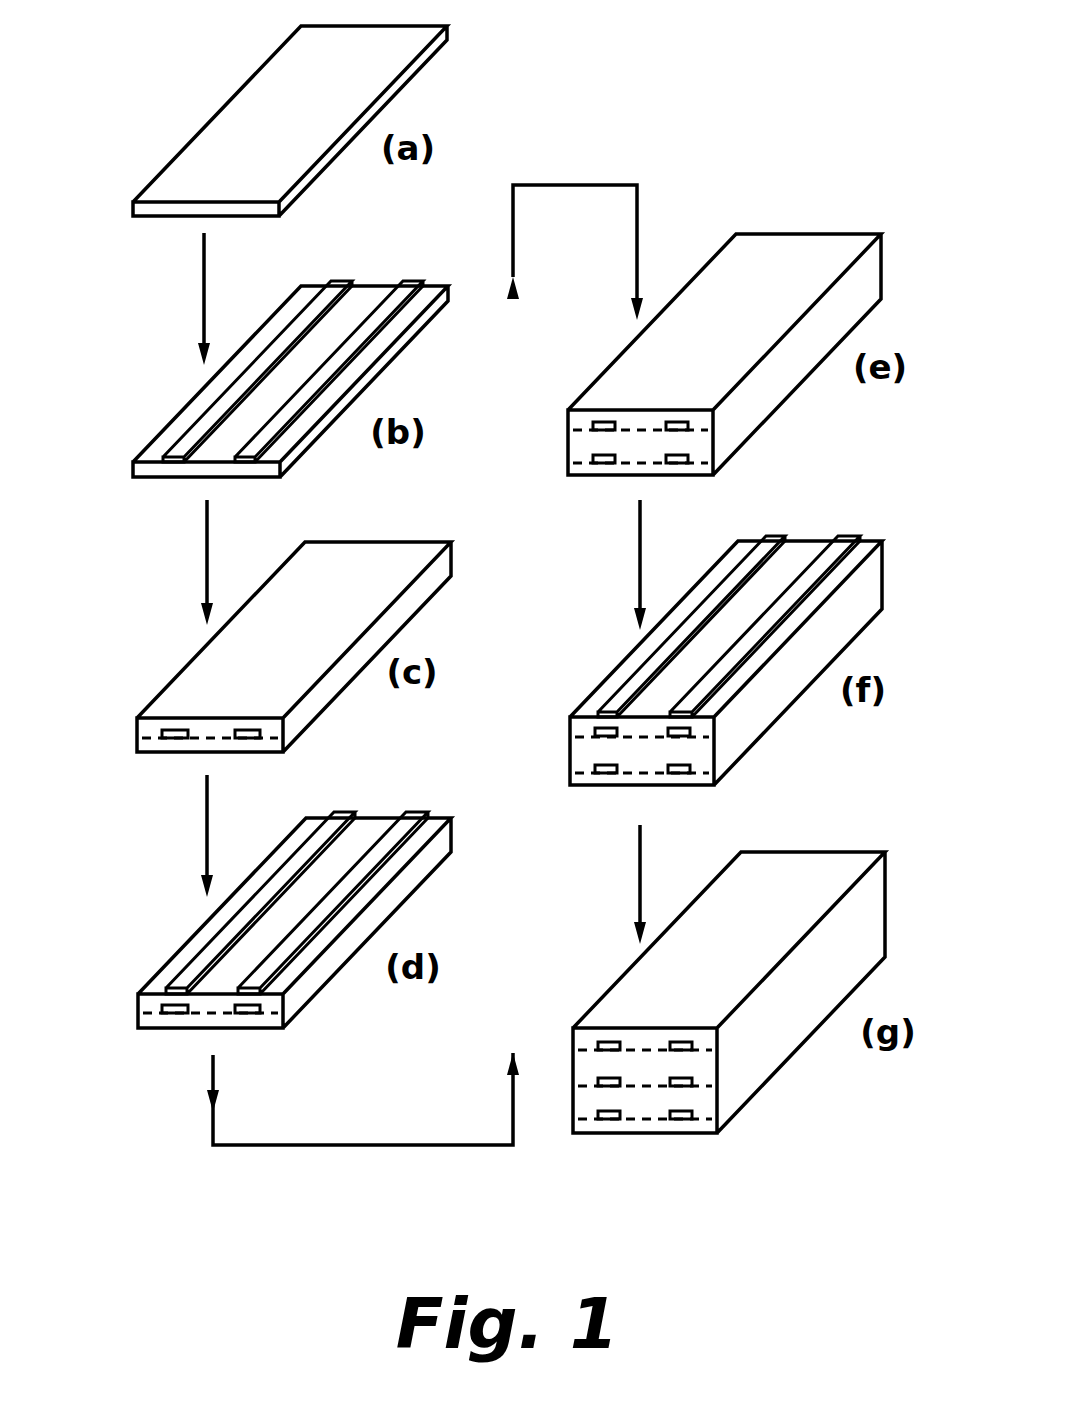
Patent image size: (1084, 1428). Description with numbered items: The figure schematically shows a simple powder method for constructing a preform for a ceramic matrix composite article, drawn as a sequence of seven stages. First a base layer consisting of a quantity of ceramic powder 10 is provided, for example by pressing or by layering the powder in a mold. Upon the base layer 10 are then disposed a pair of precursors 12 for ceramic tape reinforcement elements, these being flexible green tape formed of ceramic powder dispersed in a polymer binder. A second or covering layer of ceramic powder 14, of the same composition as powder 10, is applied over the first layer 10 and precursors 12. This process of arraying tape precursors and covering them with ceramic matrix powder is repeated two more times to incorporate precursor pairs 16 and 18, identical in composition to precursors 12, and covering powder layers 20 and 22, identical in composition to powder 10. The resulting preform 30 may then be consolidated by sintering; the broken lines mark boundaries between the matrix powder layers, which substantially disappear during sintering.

The ceramic powder base layer 10 is at (693, 1130).
The precursors 12 is at (405, 288).
The covering layer of ceramic powder 14 is at (705, 1098).
The precursor pair 16 is at (418, 815).
The precursor pair 18 is at (845, 540).
The covering powder layer 20 is at (705, 1068).
The covering powder layer 22 is at (705, 1040).
The preform 30 is at (868, 823).